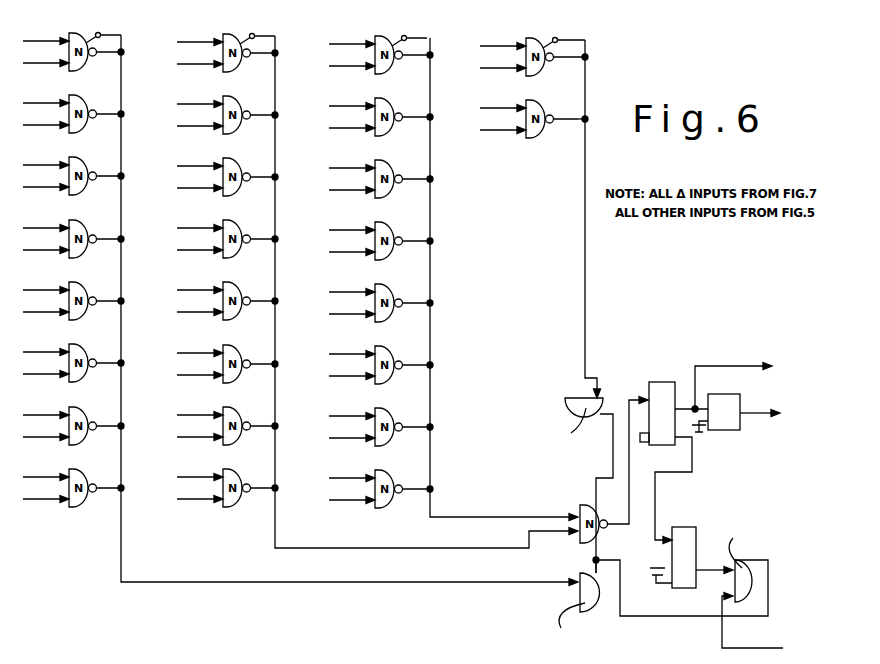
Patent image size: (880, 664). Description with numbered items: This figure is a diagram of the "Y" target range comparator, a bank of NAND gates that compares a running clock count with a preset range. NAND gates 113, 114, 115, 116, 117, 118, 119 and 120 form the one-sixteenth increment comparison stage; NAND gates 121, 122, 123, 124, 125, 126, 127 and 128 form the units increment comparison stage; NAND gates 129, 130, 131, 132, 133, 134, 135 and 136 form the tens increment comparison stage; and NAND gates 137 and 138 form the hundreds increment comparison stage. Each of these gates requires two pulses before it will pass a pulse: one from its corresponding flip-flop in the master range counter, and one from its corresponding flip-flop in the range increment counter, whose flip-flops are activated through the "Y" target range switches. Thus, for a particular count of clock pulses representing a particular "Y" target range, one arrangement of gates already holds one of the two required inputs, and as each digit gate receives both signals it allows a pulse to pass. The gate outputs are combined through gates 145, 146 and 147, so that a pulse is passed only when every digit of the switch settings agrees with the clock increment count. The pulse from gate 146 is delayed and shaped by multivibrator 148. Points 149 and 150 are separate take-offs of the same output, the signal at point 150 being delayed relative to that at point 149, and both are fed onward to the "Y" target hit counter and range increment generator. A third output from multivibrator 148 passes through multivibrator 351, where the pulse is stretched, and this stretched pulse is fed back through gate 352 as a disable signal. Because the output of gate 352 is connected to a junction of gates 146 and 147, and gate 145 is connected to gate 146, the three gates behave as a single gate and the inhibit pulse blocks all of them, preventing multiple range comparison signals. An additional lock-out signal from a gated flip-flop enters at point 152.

The NAND gate 113 is at (77, 39).
The NAND gate 114 is at (77, 101).
The NAND gate 115 is at (77, 163).
The NAND gate 116 is at (77, 226).
The NAND gate 117 is at (77, 288).
The NAND gate 118 is at (77, 350).
The NAND gate 119 is at (77, 413).
The NAND gate 120 is at (77, 475).
The NAND gate 121 is at (231, 40).
The NAND gate 122 is at (231, 102).
The NAND gate 123 is at (231, 164).
The NAND gate 124 is at (231, 226).
The NAND gate 125 is at (231, 288).
The NAND gate 126 is at (231, 351).
The NAND gate 127 is at (231, 413).
The NAND gate 128 is at (231, 475).
The NAND gate 129 is at (383, 42).
The NAND gate 130 is at (383, 104).
The NAND gate 131 is at (383, 166).
The NAND gate 132 is at (383, 228).
The NAND gate 133 is at (383, 290).
The NAND gate 134 is at (383, 352).
The NAND gate 135 is at (383, 414).
The NAND gate 136 is at (383, 476).
The NAND gate 137 is at (534, 44).
The NAND gate 138 is at (534, 106).
The gate 145 is at (582, 397).
The gate 146 is at (588, 507).
The gate 147 is at (583, 584).
The multivibrator 148 is at (663, 385).
The point 149 is at (747, 366).
The point 150 is at (761, 414).
The multivibrator 351 is at (688, 527).
The gate 352 is at (745, 588).
The point 152 is at (752, 648).